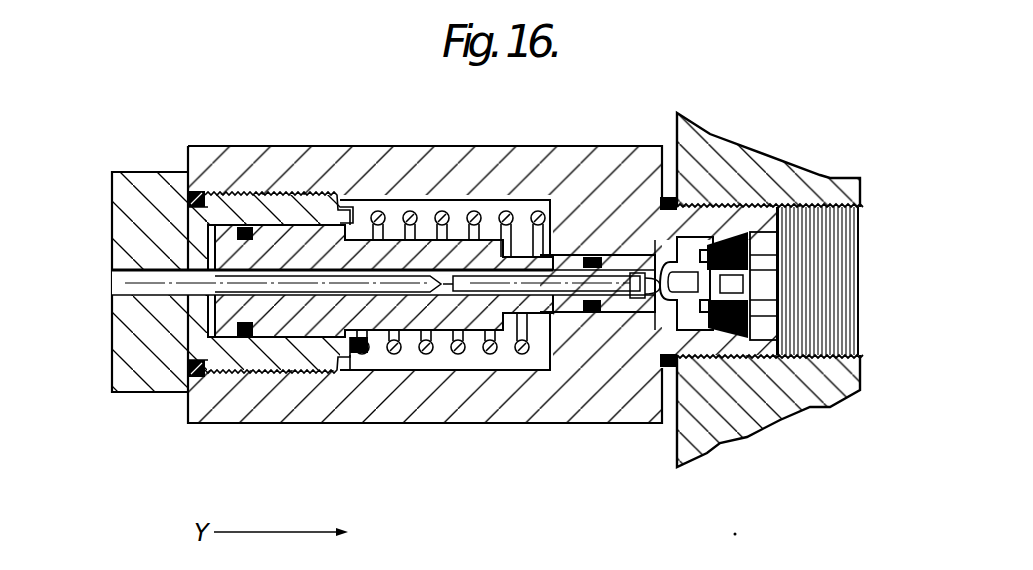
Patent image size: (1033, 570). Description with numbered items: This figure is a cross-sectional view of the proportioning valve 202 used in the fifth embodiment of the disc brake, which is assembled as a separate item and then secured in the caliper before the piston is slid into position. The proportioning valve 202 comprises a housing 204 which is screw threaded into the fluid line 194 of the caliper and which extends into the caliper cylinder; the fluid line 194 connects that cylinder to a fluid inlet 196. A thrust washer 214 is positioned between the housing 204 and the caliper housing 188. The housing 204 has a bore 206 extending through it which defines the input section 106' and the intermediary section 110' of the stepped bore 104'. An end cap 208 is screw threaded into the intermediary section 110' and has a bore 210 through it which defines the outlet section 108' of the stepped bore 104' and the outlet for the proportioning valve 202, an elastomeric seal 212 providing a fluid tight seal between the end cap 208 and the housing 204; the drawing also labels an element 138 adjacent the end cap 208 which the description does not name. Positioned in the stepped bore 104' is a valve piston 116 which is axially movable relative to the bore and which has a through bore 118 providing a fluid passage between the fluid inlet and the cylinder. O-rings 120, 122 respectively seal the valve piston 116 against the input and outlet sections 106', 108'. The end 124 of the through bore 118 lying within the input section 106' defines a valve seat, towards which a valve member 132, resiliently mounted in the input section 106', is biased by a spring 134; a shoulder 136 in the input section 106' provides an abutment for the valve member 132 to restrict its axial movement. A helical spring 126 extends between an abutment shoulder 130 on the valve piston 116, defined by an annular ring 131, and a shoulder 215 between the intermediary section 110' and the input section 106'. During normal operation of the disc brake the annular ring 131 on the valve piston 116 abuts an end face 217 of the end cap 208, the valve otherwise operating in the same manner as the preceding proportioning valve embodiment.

The stepped bore 104' is at (458, 174).
The input section 106' is at (597, 370).
The outlet section 108' is at (384, 214).
The intermediary section 110' is at (445, 210).
The valve piston 116 is at (398, 400).
The through bore 118 is at (305, 265).
The O-ring 120 is at (587, 247).
The O-ring 122 is at (241, 340).
The end of the through bore 124 is at (682, 318).
The helical spring 126 is at (472, 372).
The abutment shoulder 130 is at (372, 366).
The annular ring 131 is at (355, 205).
The valve member 132 is at (693, 243).
The spring 134 is at (705, 237).
The shoulder 136 is at (677, 237).
The stop plate 138 is at (210, 238).
The caliper housing 188 is at (810, 188).
The fluid line 194 is at (810, 342).
The fluid inlet 196 is at (840, 263).
The proportioning valve 202 is at (468, 139).
The housing 204 is at (445, 427).
The bore 206 is at (527, 364).
The end cap 208 is at (128, 315).
The bore 210 is at (115, 280).
The elastomeric seal 212 is at (197, 378).
The thrust washer 214 is at (677, 313).
The shoulder 215 is at (527, 190).
The end face 217 is at (352, 353).